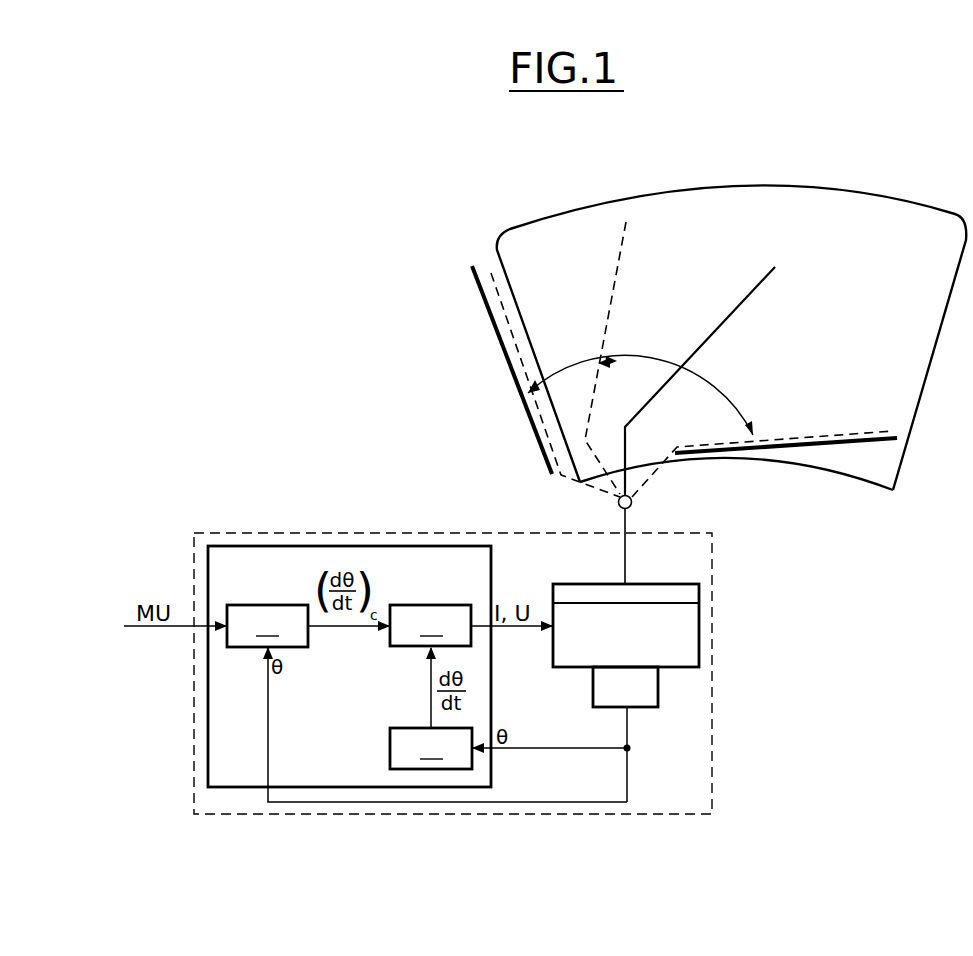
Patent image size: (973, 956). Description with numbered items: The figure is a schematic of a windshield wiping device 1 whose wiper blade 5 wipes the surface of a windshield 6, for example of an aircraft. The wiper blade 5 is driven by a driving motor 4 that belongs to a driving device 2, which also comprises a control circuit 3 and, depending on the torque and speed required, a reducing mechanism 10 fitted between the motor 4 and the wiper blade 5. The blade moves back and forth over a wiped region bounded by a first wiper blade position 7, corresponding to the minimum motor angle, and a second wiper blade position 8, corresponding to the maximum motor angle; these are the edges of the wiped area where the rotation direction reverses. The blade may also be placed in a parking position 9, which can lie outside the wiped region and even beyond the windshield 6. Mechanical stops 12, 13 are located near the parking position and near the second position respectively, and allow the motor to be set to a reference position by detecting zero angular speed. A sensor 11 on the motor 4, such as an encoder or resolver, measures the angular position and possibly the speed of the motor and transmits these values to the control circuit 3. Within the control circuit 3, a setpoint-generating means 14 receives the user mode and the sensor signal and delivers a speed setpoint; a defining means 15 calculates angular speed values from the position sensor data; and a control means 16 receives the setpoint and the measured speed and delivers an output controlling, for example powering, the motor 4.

The windshield wiping device 1 is at (264, 300).
The driving device 2 is at (712, 692).
The control circuit 3 is at (491, 685).
The driving motor 4 is at (699, 636).
The wiper blade 5 is at (758, 280).
The windshield 6 is at (935, 223).
The first wiper blade position 7 is at (620, 236).
The second wiper blade position 8 is at (888, 432).
The parking position 9 is at (490, 275).
The reducing mechanism 10 is at (699, 597).
The sensor 11 is at (658, 688).
The mechanical stop 12 is at (512, 370).
The mechanical stop 13 is at (836, 448).
The setpoint-generating means 14 is at (267, 626).
The defining means 15 is at (431, 748).
The control means 16 is at (430, 625).